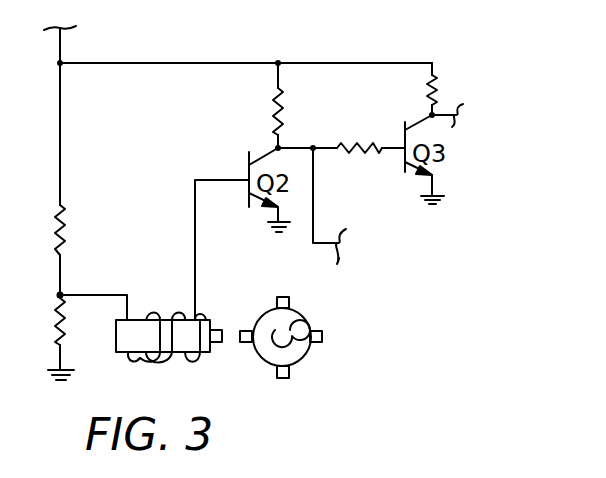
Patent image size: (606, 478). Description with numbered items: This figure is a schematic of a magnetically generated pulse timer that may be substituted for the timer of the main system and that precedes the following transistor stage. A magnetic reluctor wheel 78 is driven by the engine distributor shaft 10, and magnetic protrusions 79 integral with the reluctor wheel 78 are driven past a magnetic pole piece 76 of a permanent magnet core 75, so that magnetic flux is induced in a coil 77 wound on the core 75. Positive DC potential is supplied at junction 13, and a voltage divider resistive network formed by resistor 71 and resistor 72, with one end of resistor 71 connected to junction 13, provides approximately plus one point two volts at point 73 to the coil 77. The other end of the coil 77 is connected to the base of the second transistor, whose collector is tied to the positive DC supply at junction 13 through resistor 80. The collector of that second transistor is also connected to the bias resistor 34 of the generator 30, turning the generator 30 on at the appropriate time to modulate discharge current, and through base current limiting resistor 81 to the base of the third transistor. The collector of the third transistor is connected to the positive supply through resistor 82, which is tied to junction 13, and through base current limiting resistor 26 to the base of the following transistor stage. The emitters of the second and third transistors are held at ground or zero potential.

The engine distributor shaft 10 is at (276, 331).
The junction 13 is at (67, 17).
The base current limiting resistor 26 is at (489, 116).
The generator 30 is at (392, 266).
The bias resistor 34 is at (372, 246).
The resistor 71 is at (68, 225).
The resistor 72 is at (68, 320).
The voltage divider junction 73 is at (58, 294).
The permanent magnet core 75 is at (124, 354).
The magnetic pole piece 76 is at (220, 343).
The coil 77 is at (162, 362).
The magnetic reluctor wheel 78 is at (303, 353).
The magnetic protrusions 79 is at (289, 372).
The resistor 80 is at (272, 105).
The base current limiting resistor 81 is at (365, 146).
The resistor 82 is at (428, 88).